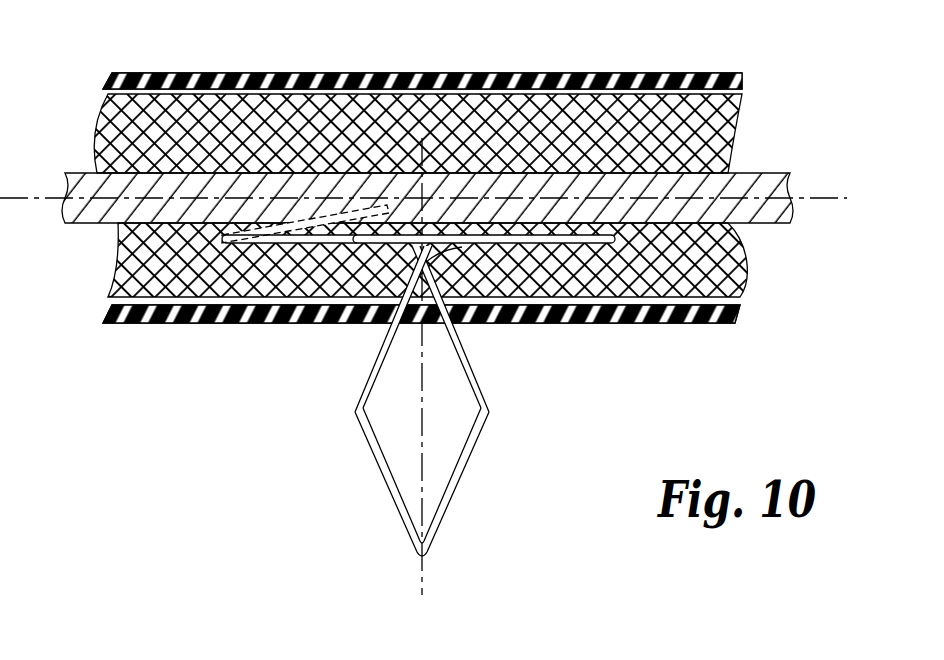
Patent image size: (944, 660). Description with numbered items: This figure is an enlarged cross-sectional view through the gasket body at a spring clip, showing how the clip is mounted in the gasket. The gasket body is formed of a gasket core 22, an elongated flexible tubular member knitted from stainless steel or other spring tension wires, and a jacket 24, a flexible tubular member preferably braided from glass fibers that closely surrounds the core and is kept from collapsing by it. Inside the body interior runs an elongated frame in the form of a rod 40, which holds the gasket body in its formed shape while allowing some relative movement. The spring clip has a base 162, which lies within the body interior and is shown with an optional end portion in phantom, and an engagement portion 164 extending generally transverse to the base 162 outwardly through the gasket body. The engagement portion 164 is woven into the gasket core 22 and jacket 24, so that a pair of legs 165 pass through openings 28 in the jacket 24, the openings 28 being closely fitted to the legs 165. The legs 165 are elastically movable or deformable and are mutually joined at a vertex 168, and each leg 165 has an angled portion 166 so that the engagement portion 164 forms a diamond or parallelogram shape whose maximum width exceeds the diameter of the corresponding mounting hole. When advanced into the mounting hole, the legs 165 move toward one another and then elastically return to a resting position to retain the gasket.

The gasket core 22 is at (707, 141).
The jacket 24 is at (677, 74).
The rod 40 is at (103, 212).
The openings 28 is at (386, 322).
The base 162 is at (553, 240).
The engagement portion 164 is at (406, 509).
The legs 165 is at (376, 363).
The angled portion 166 is at (356, 411).
The vertex 168 is at (424, 557).